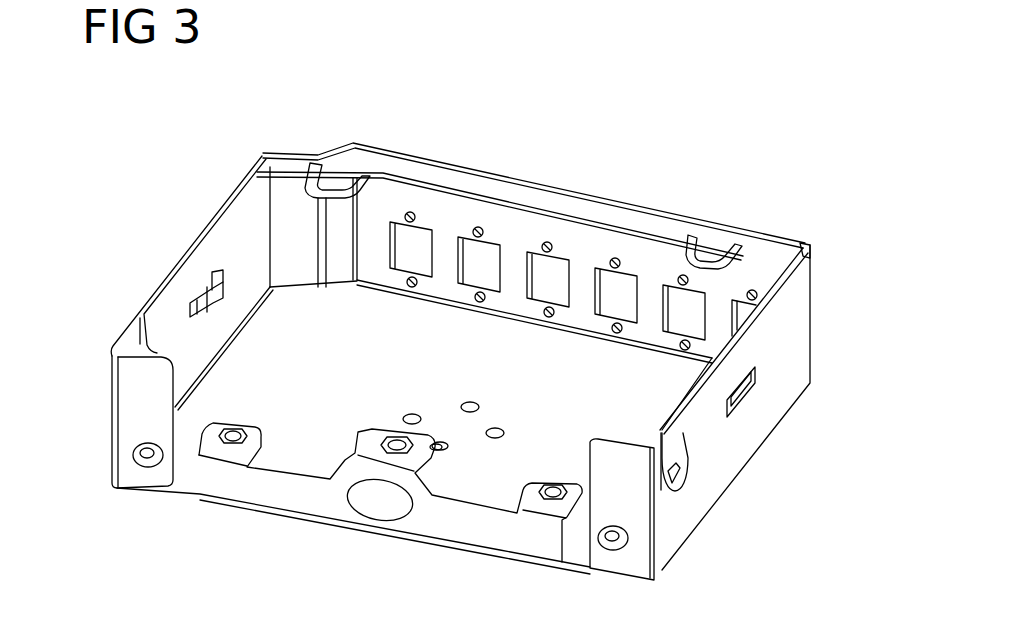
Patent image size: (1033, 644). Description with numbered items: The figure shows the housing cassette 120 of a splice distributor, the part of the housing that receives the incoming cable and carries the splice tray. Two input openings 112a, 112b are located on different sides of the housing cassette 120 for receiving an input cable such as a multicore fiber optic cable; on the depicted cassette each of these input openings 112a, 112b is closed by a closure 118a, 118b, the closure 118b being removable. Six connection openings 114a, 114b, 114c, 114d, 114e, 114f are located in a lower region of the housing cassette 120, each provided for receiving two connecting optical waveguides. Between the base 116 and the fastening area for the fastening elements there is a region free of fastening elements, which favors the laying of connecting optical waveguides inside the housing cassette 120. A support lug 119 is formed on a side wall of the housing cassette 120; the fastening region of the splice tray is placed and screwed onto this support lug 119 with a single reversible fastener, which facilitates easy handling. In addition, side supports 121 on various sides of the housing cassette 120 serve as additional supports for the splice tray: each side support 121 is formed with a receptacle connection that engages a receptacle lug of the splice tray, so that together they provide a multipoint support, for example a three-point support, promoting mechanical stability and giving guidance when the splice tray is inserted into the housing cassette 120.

The input opening 112a is at (148, 345).
The input opening 112b is at (685, 485).
The connection opening 114a is at (735, 300).
The connection opening 114b is at (690, 293).
The connection opening 114c is at (622, 272).
The connection opening 114d is at (555, 257).
The connection opening 114e is at (483, 240).
The connection opening 114f is at (417, 227).
The base 116 is at (300, 448).
The closure 118a is at (137, 335).
The closure 118b is at (680, 469).
The support lug 119 is at (403, 457).
The housing cassette 120 is at (210, 215).
The side support 121 is at (208, 285).